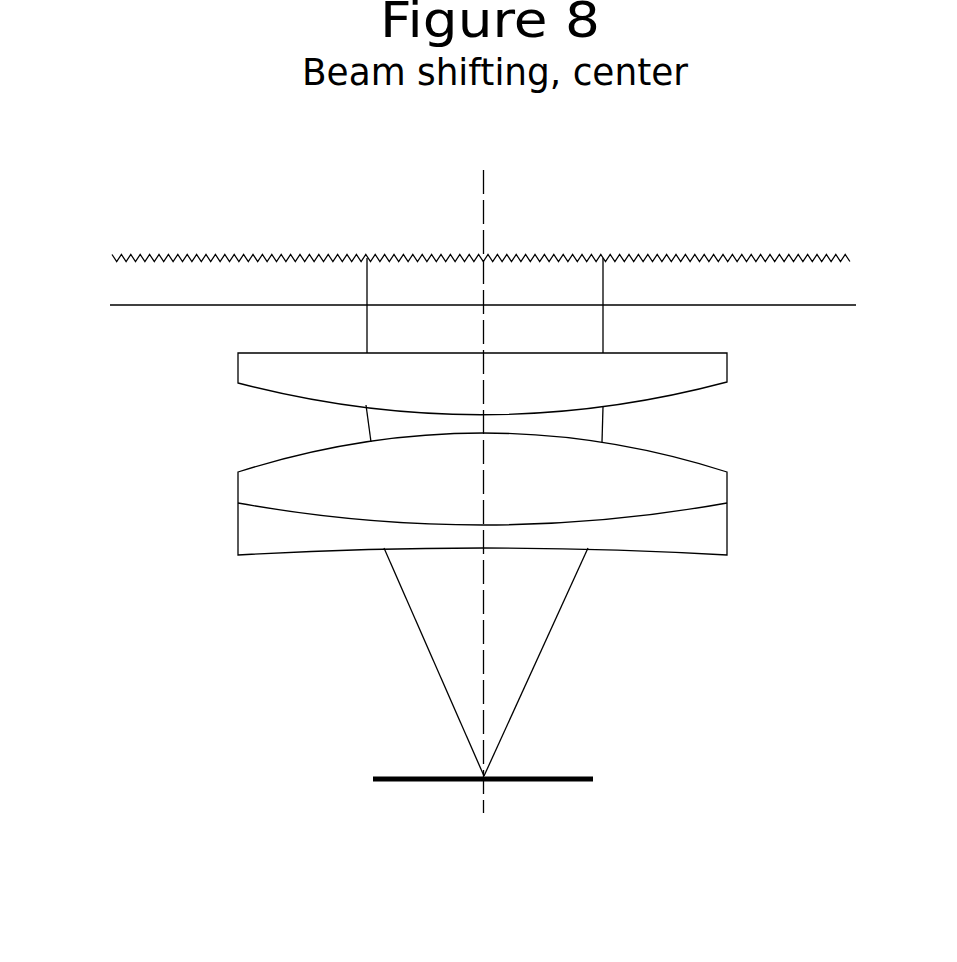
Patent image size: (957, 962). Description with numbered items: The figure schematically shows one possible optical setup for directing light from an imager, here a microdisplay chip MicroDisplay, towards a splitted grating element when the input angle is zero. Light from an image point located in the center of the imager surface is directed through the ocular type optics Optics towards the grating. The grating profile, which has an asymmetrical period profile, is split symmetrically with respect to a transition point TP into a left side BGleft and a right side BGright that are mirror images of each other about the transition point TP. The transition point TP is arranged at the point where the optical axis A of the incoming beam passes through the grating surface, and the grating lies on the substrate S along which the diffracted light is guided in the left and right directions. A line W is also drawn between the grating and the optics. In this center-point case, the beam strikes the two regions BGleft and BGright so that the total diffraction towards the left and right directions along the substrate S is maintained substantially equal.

The optical axis A is at (486, 692).
The substrate S is at (481, 279).
The window W is at (483, 310).
The left side of the grating BGleft is at (376, 257).
The right side of the grating BGright is at (783, 259).
The transition point TP is at (484, 258).
The ocular type optics Optics is at (553, 454).
The microdisplay chip MicroDisplay is at (591, 775).